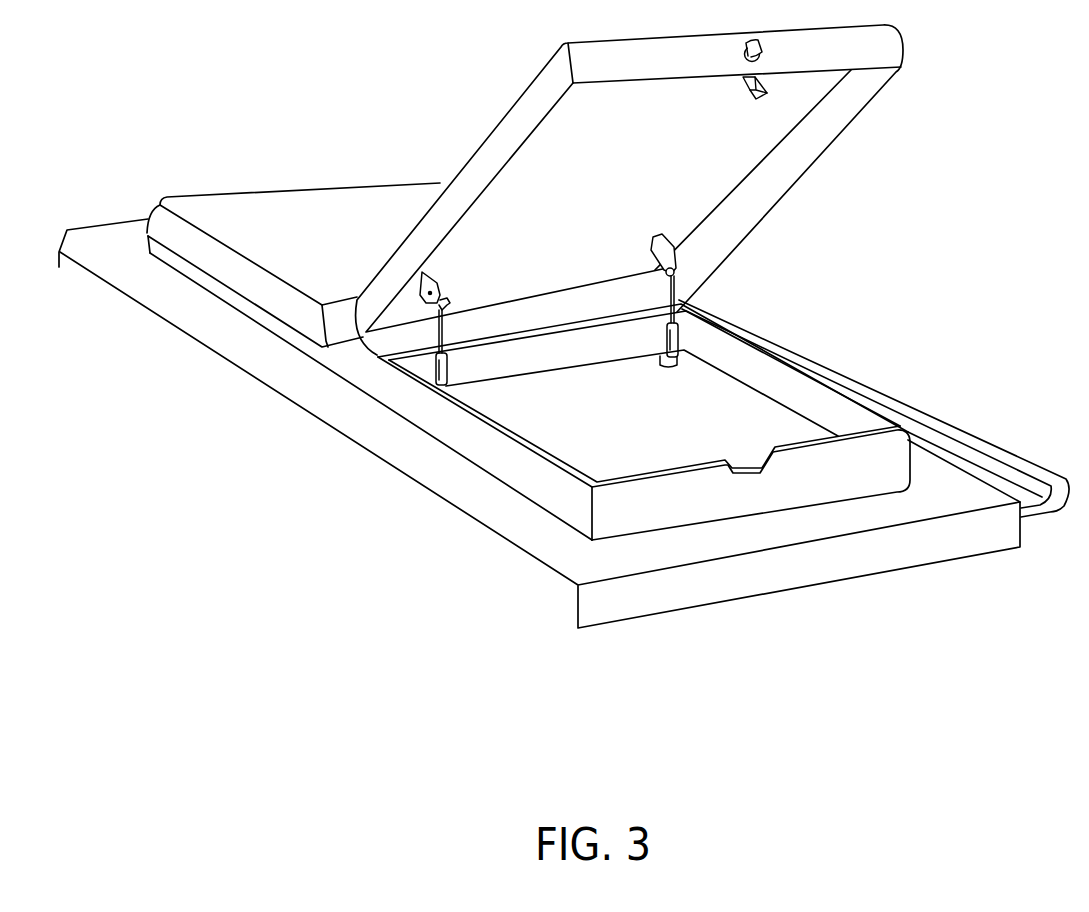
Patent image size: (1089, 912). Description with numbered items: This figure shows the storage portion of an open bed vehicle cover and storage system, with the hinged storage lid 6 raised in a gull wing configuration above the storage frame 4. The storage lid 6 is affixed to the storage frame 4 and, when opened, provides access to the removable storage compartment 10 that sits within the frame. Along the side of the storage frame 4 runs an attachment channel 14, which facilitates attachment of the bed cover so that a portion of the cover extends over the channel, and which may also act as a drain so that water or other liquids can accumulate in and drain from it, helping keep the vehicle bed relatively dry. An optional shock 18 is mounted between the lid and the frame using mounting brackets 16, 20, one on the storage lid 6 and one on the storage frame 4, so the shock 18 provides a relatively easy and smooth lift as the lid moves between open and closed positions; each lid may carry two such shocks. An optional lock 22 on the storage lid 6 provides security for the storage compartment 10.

The storage frame 4 is at (525, 609).
The storage lid 6 is at (514, 121).
The removable storage compartment 10 is at (544, 418).
The attachment channel 14 is at (1052, 516).
The mounting bracket 16 is at (674, 247).
The shock 18 is at (682, 321).
The mounting bracket 20 is at (683, 361).
The lock 22 is at (768, 48).